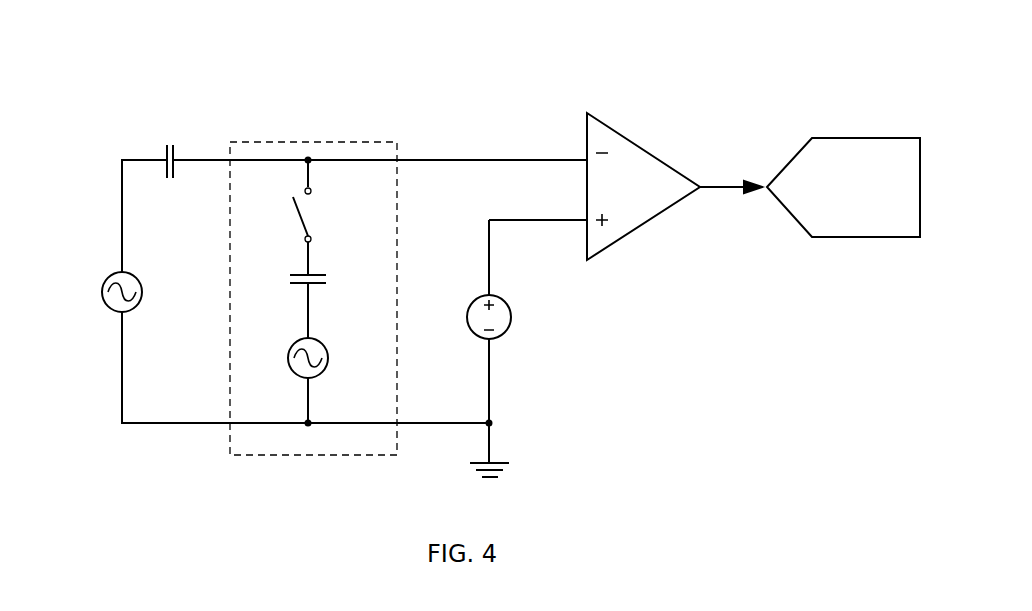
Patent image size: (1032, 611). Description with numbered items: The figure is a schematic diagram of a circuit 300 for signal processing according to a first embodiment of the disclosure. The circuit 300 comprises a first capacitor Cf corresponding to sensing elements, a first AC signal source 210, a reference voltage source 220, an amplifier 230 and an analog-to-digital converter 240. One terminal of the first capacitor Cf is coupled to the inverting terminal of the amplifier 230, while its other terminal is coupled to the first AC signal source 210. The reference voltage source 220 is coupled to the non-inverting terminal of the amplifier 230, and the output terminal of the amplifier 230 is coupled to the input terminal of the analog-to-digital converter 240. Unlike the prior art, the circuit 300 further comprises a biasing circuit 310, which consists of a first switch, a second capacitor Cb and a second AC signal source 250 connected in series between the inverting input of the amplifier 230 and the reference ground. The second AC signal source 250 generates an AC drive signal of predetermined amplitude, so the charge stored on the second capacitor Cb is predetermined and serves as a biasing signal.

The circuit for signal processing 300 is at (829, 471).
The first AC signal source 210 is at (103, 284).
The reference voltage source 220 is at (511, 318).
The amplifier 230 is at (632, 140).
The analog-to-digital converter 240 is at (843, 138).
The second AC signal source 250 is at (323, 345).
The biasing circuit 310 is at (336, 264).